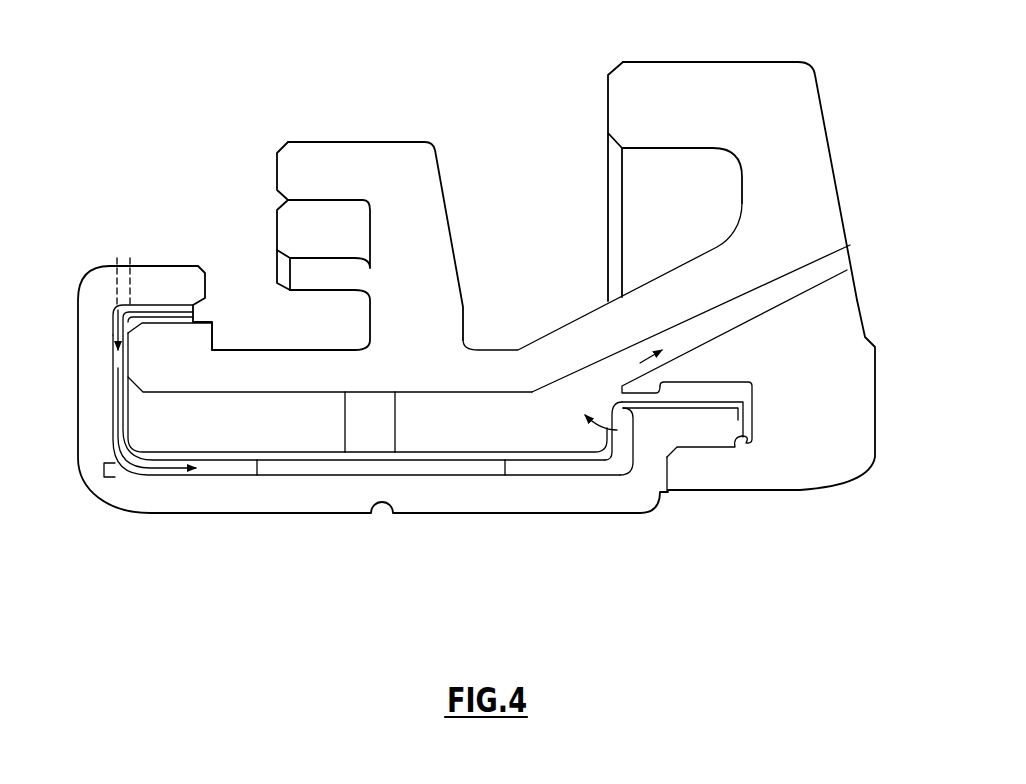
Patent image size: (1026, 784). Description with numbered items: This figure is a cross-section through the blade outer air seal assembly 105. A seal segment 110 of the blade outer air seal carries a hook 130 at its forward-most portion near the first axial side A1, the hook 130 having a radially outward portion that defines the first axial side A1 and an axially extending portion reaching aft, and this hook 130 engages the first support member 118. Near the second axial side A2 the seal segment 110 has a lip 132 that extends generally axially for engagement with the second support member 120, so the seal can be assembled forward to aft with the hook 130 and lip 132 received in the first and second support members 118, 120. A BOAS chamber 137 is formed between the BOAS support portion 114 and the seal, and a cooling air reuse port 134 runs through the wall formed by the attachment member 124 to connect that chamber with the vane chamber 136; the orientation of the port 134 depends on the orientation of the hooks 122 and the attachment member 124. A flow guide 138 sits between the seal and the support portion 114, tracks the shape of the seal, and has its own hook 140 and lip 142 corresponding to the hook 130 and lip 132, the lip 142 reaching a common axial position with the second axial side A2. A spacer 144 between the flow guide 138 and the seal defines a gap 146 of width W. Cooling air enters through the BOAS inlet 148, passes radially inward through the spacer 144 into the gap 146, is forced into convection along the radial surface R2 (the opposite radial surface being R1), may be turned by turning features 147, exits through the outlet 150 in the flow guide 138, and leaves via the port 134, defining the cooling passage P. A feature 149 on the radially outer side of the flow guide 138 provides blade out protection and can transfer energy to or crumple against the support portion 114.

The blade outer air seal assembly 105 is at (170, 57).
The seal segment 110 is at (140, 493).
The BOAS support portion 114 is at (483, 363).
The first support member 118 is at (182, 340).
The second support member 120 is at (693, 470).
The hooks 122 is at (320, 165).
The attachment member 124 is at (663, 100).
The hook 130 is at (152, 282).
The lip 132 is at (740, 455).
The cooling air reuse port 134 is at (803, 280).
The vane chamber 136 is at (850, 215).
The BOAS chamber 137 is at (532, 436).
The flow guide 138 is at (120, 412).
The hook 140 is at (113, 307).
The lip 142 is at (680, 405).
The spacer 144 is at (117, 345).
The gap 146 is at (228, 470).
The turning features 147 is at (303, 470).
The BOAS inlet 148 is at (118, 315).
The feature 149 is at (393, 427).
The outlet 150 is at (613, 432).
The first axial side A1 is at (72, 420).
The second axial side A2 is at (683, 430).
The width W is at (100, 468).
The cooling passage P is at (173, 470).
The radial surface R1 is at (388, 477).
The radial surface R2 is at (452, 480).